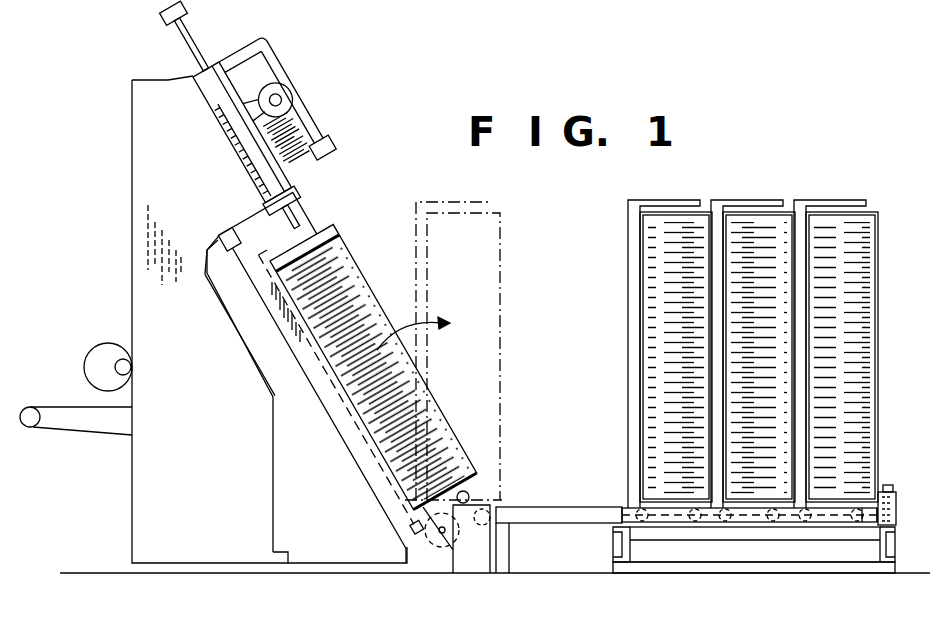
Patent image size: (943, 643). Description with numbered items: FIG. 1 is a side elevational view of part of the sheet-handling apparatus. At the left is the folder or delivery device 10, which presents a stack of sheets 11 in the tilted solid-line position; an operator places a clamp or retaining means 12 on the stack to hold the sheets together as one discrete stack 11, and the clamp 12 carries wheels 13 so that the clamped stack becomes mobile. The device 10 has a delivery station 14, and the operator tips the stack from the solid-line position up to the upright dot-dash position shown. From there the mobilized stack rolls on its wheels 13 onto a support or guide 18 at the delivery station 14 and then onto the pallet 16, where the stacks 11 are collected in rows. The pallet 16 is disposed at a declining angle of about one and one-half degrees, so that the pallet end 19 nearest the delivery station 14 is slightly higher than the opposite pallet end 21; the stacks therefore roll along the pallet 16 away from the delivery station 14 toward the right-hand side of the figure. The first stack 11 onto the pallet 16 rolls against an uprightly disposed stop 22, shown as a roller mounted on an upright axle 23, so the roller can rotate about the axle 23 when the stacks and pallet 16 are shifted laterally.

The folder device 10 is at (258, 455).
The stack of sheets 11 is at (420, 232).
The clamp 12 is at (340, 412).
The wheels 13 is at (697, 523).
The delivery station 14 is at (460, 518).
The pallet 16 is at (750, 523).
The support or guide 18 is at (547, 508).
The pallet end 19 is at (620, 515).
The pallet end 21 is at (868, 520).
The stop 22 is at (895, 487).
The axle 23 is at (897, 538).